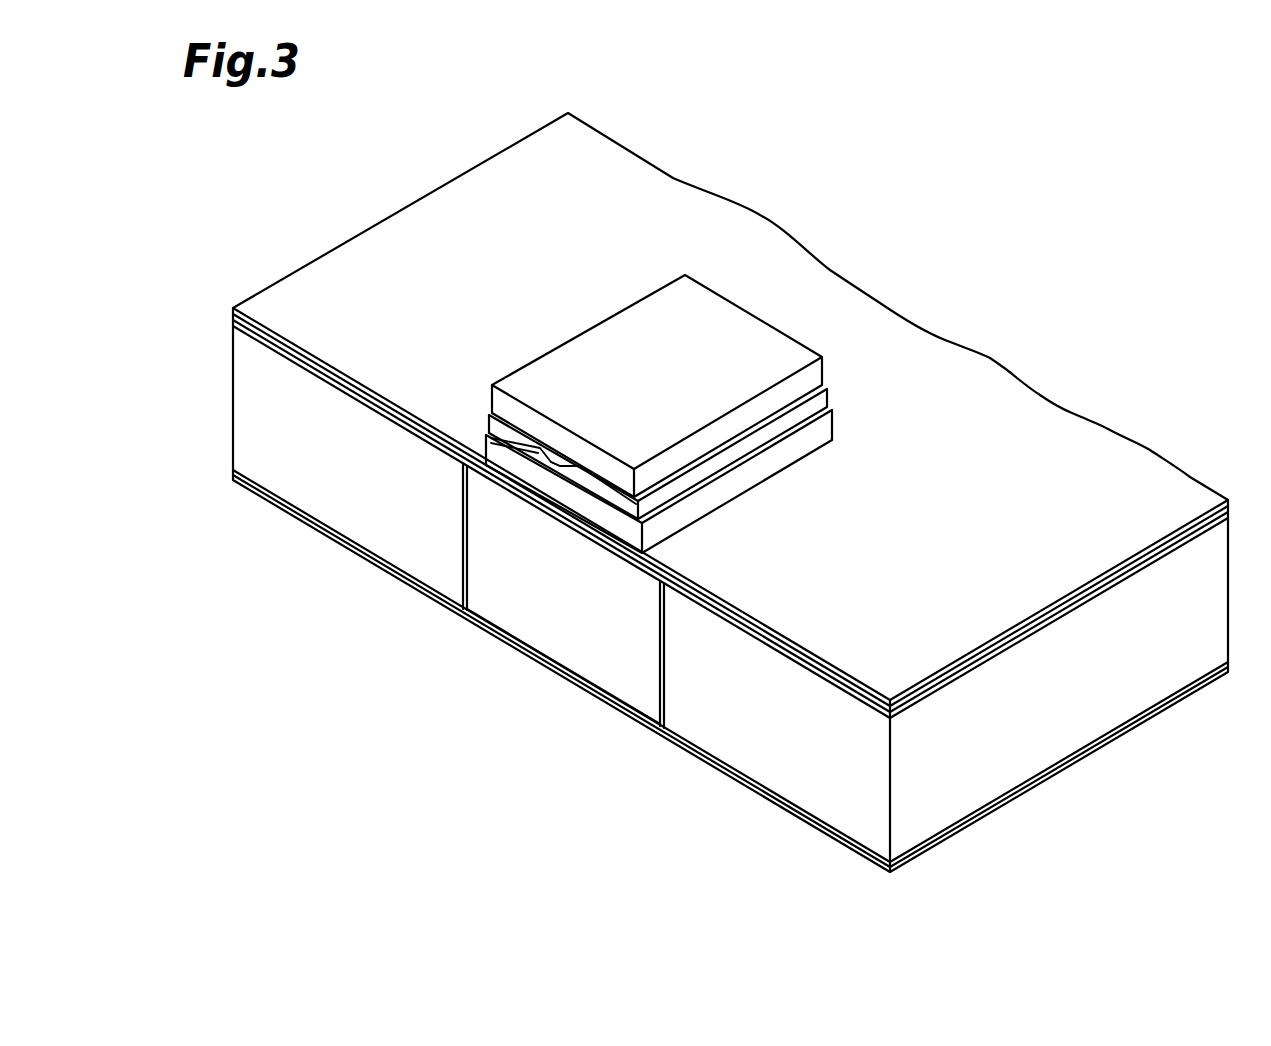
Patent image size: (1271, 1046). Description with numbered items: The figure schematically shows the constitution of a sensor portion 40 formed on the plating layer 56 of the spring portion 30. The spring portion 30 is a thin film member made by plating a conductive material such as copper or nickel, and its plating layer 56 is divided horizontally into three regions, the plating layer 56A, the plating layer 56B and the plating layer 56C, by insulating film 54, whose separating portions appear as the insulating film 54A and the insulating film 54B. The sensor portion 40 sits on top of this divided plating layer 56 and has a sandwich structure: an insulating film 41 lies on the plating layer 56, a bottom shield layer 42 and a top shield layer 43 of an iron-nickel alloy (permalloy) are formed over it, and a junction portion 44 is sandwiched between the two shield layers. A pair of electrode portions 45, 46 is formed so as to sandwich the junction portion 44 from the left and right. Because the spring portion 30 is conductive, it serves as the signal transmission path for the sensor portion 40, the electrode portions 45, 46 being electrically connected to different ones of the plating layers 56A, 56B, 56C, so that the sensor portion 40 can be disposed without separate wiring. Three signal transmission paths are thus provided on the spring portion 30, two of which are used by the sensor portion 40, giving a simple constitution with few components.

The spring portion 30 is at (980, 237).
The sensor portion 40 is at (688, 340).
The insulating film 41 is at (597, 542).
The bottom shield layer 42 is at (641, 535).
The top shield layer 43 is at (603, 470).
The junction portion 44 is at (560, 464).
The electrode portion 45 is at (641, 504).
The electrode portion 46 is at (487, 428).
The insulating film 54 is at (548, 643).
The insulating film 54A is at (580, 680).
The insulating film 54B is at (460, 546).
The plating layer 56 is at (561, 599).
The plating layer 56A is at (525, 610).
The plating layer 56B is at (338, 495).
The plating layer 56C is at (762, 750).